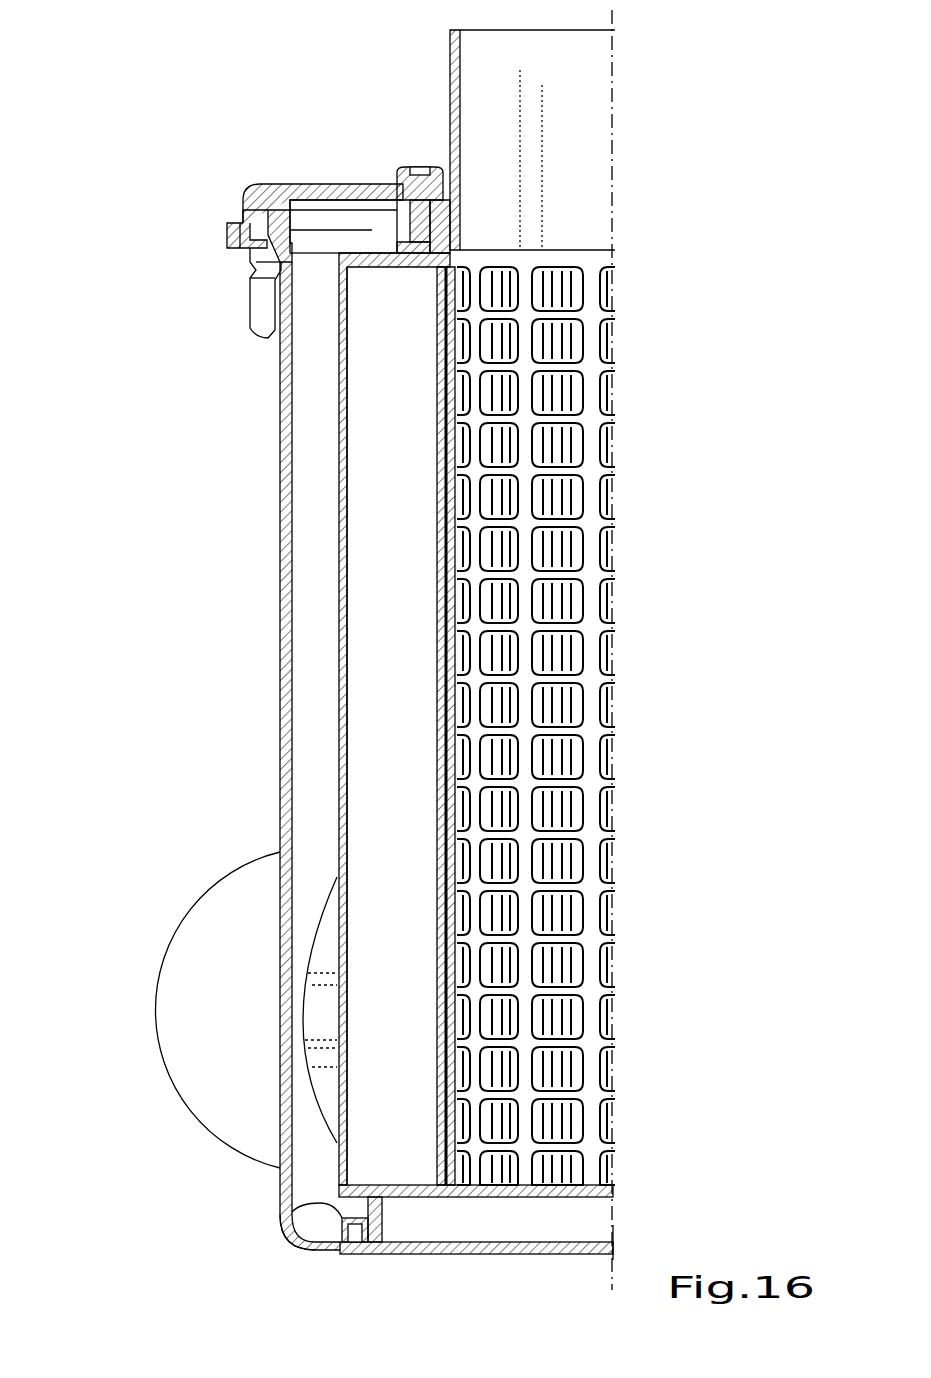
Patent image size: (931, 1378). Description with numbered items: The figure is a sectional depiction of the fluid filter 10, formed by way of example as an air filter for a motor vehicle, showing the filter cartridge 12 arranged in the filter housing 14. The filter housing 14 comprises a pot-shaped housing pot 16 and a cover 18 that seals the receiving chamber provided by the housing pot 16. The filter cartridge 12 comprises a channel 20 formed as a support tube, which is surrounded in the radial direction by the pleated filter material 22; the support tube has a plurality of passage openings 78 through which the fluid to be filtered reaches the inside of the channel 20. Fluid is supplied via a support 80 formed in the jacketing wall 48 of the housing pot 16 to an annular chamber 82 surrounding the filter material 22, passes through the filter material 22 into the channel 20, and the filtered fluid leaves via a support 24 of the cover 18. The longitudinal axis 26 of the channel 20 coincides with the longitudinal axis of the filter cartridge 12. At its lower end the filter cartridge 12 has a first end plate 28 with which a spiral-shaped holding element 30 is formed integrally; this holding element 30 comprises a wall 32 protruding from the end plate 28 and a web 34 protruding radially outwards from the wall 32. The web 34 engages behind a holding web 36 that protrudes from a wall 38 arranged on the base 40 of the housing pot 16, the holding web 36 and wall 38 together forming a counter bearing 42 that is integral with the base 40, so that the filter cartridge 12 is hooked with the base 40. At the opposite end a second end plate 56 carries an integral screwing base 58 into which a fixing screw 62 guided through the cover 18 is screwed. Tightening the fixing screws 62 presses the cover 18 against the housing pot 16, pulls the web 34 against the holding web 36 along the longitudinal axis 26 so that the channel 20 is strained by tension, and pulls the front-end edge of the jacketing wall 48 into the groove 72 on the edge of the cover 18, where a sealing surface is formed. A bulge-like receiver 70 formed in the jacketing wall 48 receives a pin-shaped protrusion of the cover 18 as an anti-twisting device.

The fluid filter 10 is at (240, 116).
The filter cartridge 12 is at (584, 720).
The filter housing 14 is at (232, 272).
The housing pot 16 is at (280, 503).
The cover 18 is at (450, 140).
The channel 20 is at (585, 417).
The filter material 22 is at (370, 765).
The support 24 is at (580, 155).
The longitudinal axis 26 is at (615, 235).
The end plate 28 is at (585, 1204).
The holding element 30 is at (400, 1212).
The wall 32 is at (378, 1225).
The web 34 is at (357, 1247).
The holding web 36 is at (290, 1212).
The wall 38 is at (340, 1247).
The base 40 is at (500, 1255).
The counter bearing 42 is at (335, 1232).
The jacketing wall 48 is at (285, 717).
The end plate 56 is at (372, 247).
The screwing base 58 is at (445, 208).
The fixing screw 62 is at (400, 165).
The receiver 70 is at (260, 300).
The groove 72 is at (245, 225).
The passage openings 78 is at (565, 455).
The support 80 is at (175, 1005).
The annular chamber 82 is at (330, 592).